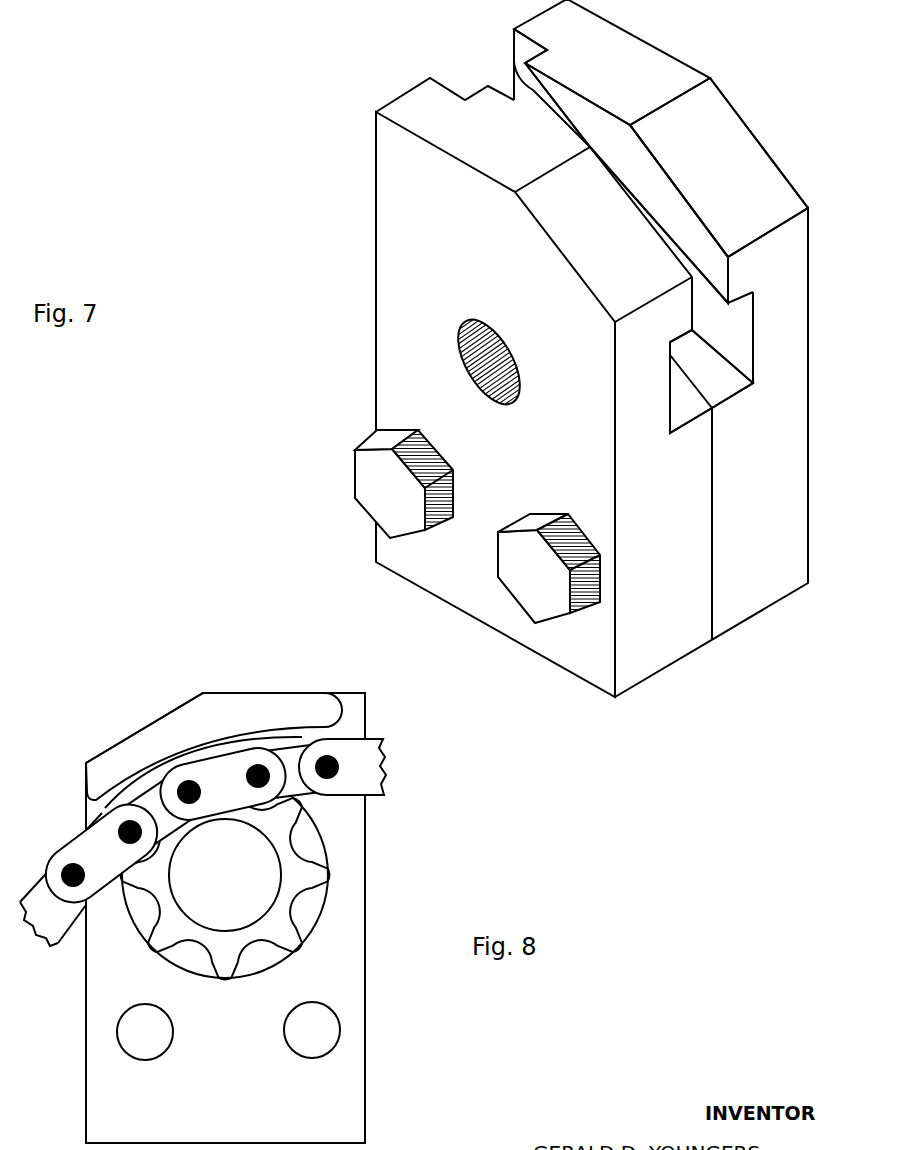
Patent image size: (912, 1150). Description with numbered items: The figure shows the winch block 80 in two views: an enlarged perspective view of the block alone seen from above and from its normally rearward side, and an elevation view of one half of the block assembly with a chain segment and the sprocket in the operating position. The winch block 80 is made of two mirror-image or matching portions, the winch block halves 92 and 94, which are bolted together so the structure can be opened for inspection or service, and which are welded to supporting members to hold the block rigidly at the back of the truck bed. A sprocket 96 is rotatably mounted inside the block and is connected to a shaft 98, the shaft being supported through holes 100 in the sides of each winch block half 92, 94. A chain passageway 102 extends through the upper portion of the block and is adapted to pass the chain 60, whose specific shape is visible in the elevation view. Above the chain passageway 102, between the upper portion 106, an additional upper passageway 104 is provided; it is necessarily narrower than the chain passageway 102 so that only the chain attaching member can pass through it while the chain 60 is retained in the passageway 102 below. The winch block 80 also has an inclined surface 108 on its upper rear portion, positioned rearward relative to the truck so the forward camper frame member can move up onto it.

In FIG. 8, the chain 60 is at (362, 762).
In FIG. 7, the winch block 80 is at (377, 150).
In FIG. 7, the winch block half 92 is at (435, 237).
In FIG. 8, the winch block half 92 is at (332, 982).
In FIG. 7, the winch block half 94 is at (603, 45).
In FIG. 8, the sprocket 96 is at (277, 820).
In FIG. 8, the shaft 98 is at (240, 863).
In FIG. 7, the holes 100 is at (485, 358).
In FIG. 7, the chain passageway 102 is at (524, 43).
In FIG. 7, the upper passageway 104 is at (668, 205).
In FIG. 8, the upper portion 106 is at (230, 727).
In FIG. 7, the inclined surface 108 is at (703, 148).
In FIG. 8, the inclined surface 108 is at (130, 737).